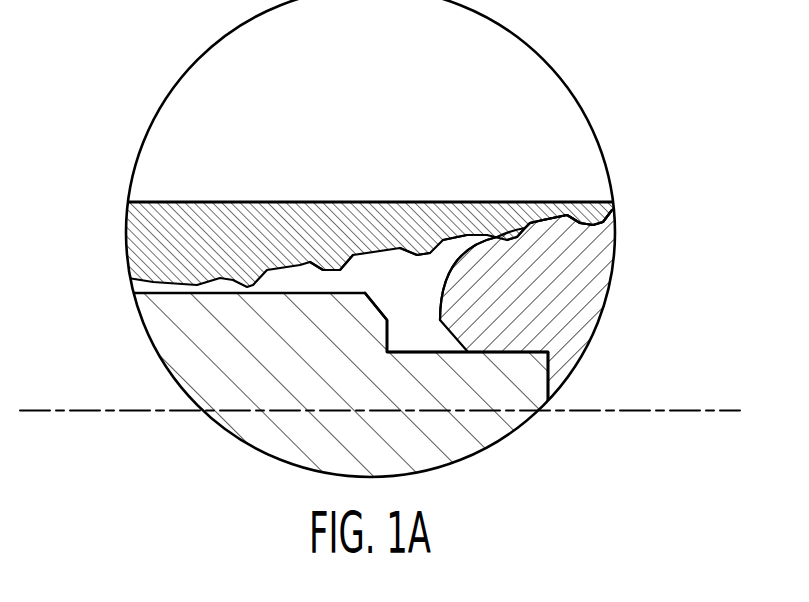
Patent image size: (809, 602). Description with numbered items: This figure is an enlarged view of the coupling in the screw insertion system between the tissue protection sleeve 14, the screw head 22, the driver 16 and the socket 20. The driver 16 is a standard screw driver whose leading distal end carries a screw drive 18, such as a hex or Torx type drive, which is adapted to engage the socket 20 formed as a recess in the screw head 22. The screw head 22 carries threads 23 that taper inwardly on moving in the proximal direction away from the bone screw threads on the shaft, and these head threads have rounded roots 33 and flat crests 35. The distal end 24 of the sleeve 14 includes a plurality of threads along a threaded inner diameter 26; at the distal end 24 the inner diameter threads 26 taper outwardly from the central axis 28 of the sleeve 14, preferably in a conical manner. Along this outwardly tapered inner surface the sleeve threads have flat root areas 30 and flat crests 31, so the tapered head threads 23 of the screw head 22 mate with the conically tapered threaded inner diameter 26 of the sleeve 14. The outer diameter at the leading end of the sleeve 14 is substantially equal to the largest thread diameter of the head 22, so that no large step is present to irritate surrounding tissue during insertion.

The tissue protection sleeve 14 is at (203, 211).
The driver 16 is at (485, 430).
The screw drive 18 is at (525, 384).
The socket 20 is at (560, 336).
The screw head 22 is at (550, 300).
The threads 23 is at (612, 212).
The distal end 24 is at (515, 228).
The threaded inner diameter 26 is at (340, 262).
The central axis 28 is at (88, 411).
The flat root areas 30 is at (467, 232).
The flat crests 31 is at (417, 253).
The rounded roots 33 is at (507, 240).
The flat crests 35 is at (555, 224).